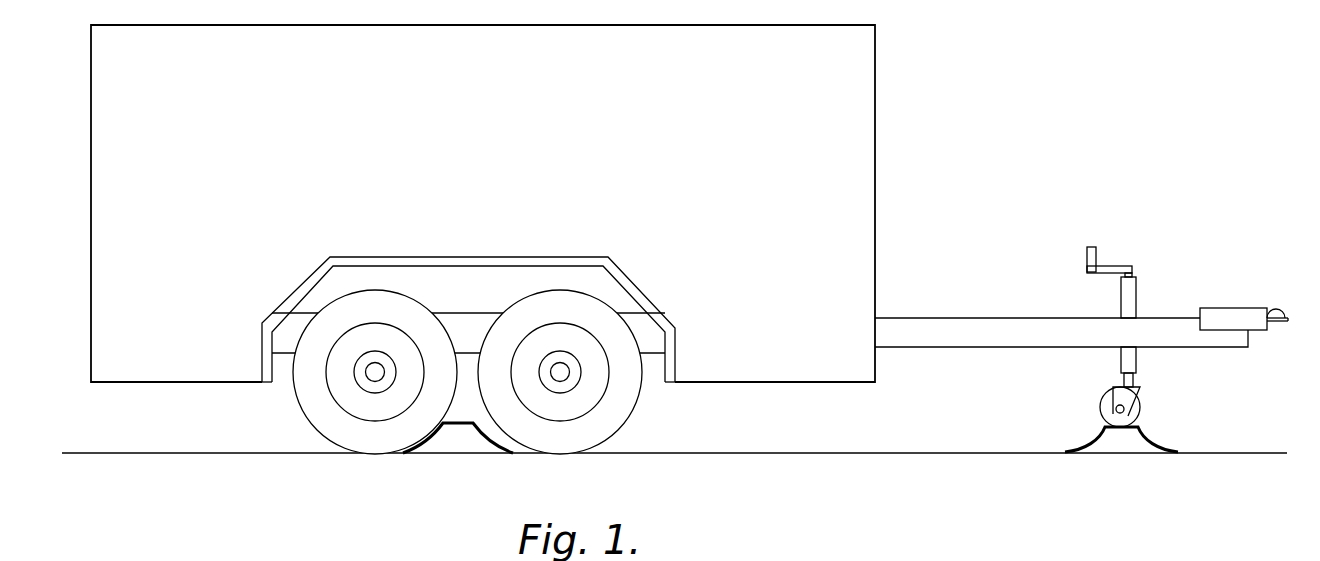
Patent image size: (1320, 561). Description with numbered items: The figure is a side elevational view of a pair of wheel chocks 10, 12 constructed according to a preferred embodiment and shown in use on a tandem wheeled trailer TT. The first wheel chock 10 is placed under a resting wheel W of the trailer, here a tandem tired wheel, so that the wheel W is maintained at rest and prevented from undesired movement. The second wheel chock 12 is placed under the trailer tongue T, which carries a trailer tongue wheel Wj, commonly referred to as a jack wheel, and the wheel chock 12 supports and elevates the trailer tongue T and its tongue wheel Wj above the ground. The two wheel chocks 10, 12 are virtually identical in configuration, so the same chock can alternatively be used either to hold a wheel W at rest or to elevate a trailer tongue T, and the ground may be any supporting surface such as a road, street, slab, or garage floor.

The tandem wheeled trailer TT is at (861, 127).
The wheel W is at (352, 438).
The wheel chock 10 is at (457, 440).
The trailer tongue T is at (1012, 330).
The trailer tongue wheel Wj is at (1132, 413).
The wheel chock 12 is at (1112, 442).